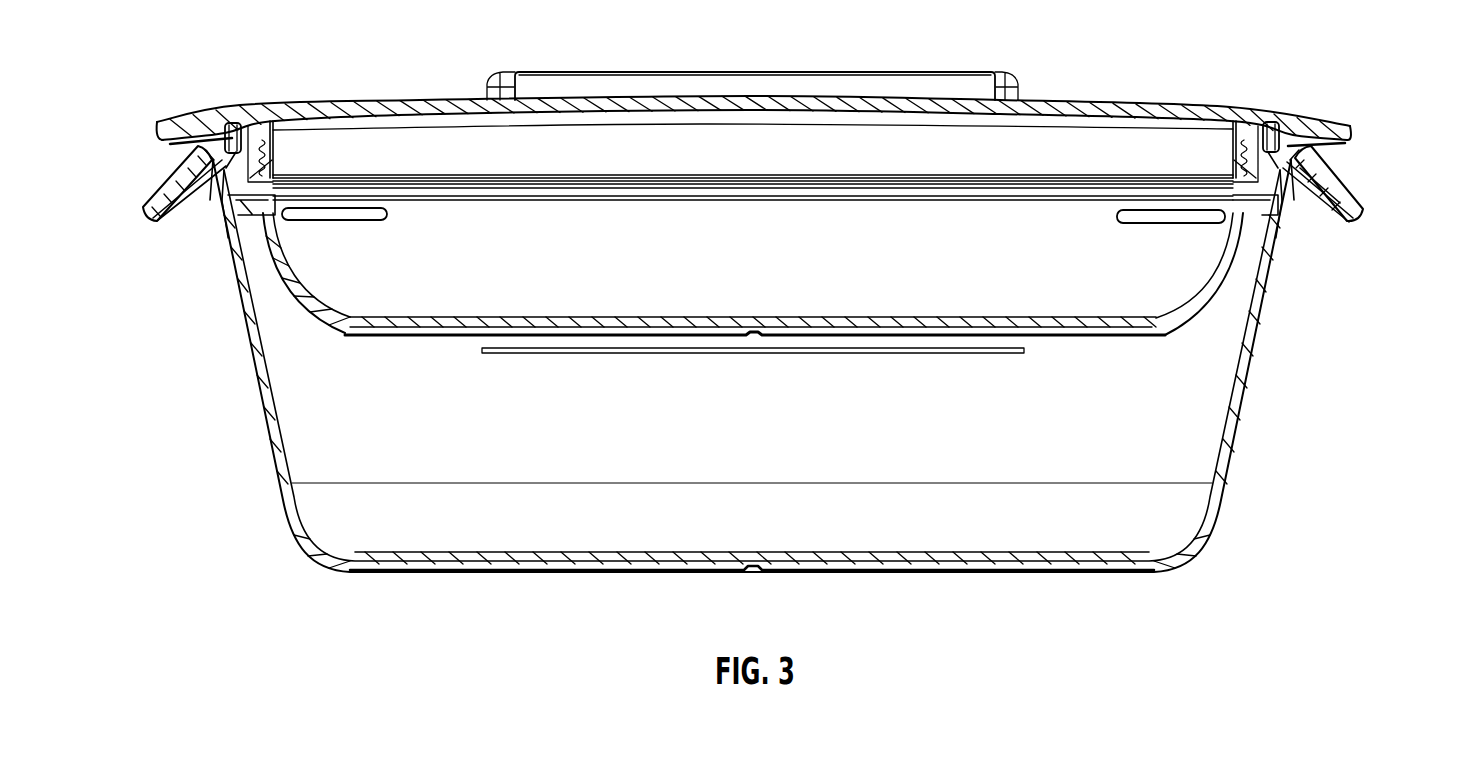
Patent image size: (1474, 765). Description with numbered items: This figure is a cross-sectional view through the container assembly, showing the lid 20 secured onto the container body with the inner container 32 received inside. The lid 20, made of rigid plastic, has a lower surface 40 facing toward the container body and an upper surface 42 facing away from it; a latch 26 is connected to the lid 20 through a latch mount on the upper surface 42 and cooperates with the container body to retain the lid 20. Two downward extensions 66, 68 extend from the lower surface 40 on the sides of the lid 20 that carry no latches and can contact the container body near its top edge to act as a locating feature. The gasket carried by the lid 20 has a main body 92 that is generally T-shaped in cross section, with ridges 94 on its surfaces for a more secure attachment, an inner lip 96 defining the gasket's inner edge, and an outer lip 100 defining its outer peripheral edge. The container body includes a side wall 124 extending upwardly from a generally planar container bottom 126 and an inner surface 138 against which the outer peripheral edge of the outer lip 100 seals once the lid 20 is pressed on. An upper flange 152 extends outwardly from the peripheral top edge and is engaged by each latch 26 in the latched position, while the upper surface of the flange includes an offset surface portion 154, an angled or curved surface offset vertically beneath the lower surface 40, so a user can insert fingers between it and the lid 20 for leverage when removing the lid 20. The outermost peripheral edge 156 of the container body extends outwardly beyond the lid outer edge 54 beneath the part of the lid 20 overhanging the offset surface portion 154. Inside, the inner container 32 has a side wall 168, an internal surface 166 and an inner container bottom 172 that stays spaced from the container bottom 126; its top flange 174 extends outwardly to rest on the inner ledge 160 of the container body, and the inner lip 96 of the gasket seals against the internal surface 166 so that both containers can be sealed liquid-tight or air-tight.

The lid 20 is at (768, 135).
The latch 26 is at (664, 86).
The inner container 32 is at (753, 314).
The lower surface 40 is at (422, 122).
The upper surface 42 is at (403, 99).
The lid outer edge 54 is at (1358, 131).
The downward extension 66 is at (1300, 124).
The downward extension 68 is at (212, 124).
The main body 92 is at (1257, 126).
The ridges 94 is at (445, 196).
The inner lip 96 is at (288, 219).
The outer lip 100 is at (222, 222).
The side wall 124 is at (1262, 356).
The container bottom 126 is at (1000, 563).
The inner surface 138 is at (1232, 457).
The upper flange 152 is at (150, 210).
The offset surface portion 154 is at (178, 185).
The outermost peripheral edge 156 is at (1382, 211).
The inner ledge 160 is at (1298, 201).
The internal surface 166 is at (1215, 283).
The side wall 168 is at (1248, 266).
The inner container bottom 172 is at (1068, 326).
The top flange 174 is at (1330, 187).